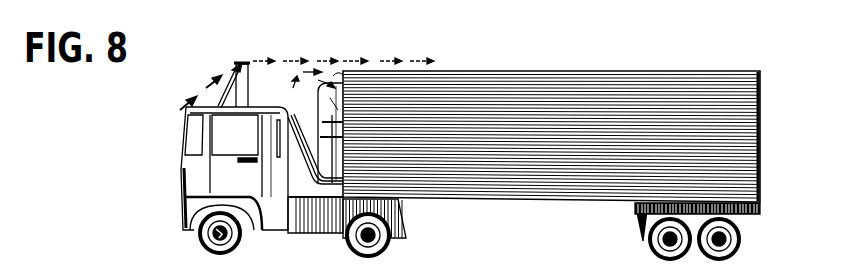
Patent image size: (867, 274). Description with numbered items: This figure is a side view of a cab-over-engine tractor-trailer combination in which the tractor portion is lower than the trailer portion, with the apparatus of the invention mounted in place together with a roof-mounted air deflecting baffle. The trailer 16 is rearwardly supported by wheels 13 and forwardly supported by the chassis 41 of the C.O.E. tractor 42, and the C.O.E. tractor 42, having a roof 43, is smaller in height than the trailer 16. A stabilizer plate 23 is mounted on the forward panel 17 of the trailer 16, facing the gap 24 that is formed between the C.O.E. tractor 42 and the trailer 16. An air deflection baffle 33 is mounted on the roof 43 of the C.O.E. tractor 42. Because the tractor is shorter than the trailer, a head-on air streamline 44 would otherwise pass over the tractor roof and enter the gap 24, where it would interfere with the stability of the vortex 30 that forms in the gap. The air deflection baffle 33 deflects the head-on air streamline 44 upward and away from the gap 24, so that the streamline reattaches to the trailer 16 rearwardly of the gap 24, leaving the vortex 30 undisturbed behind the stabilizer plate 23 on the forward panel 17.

The wheels 13 is at (240, 246).
The trailer 16 is at (694, 65).
The forward panel 17 is at (341, 84).
The stabilizer plate 23 is at (343, 137).
The gap 24 is at (343, 190).
The vortex 30 is at (292, 88).
The air deflection baffle 33 is at (214, 84).
The chassis 41 is at (328, 228).
The C.O.E. tractor 42 is at (234, 168).
The roof 43 is at (248, 63).
The head-on air streamline 44 is at (178, 127).